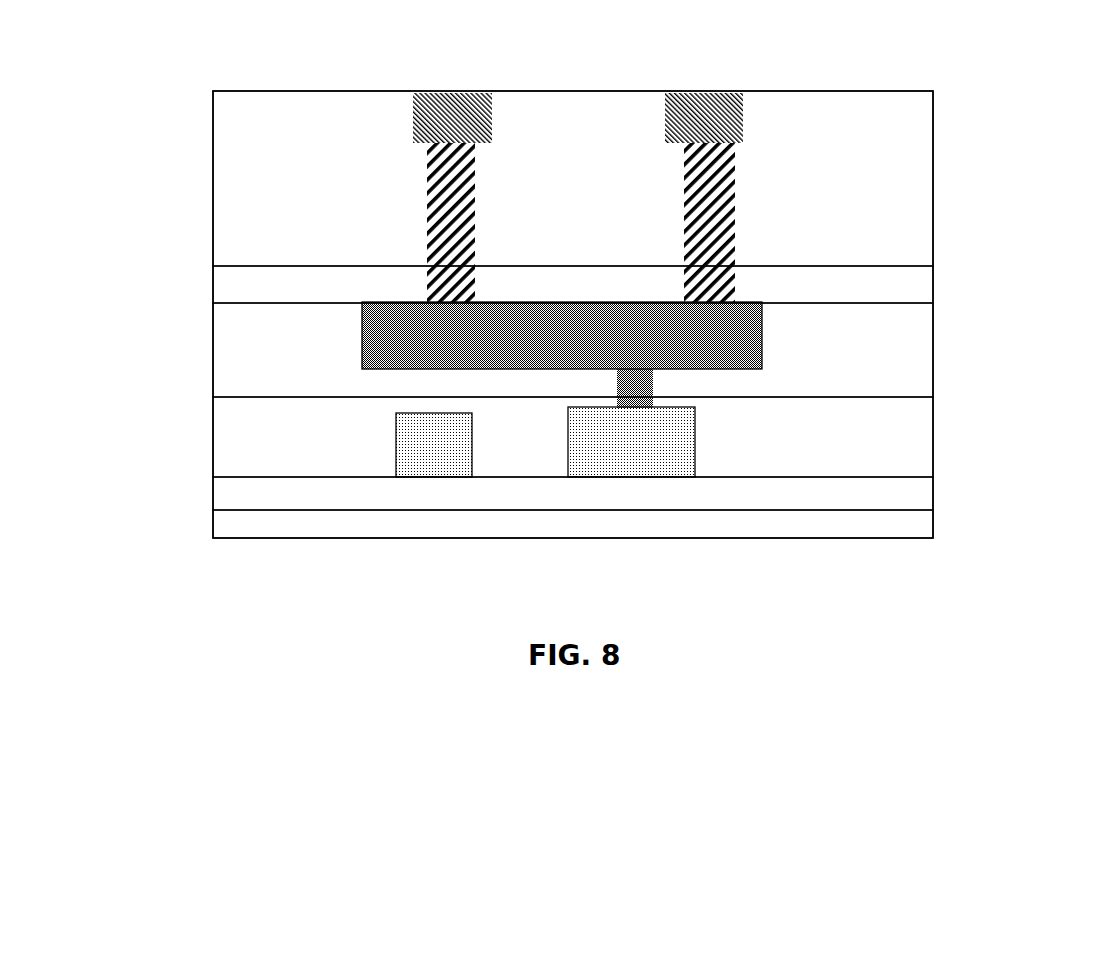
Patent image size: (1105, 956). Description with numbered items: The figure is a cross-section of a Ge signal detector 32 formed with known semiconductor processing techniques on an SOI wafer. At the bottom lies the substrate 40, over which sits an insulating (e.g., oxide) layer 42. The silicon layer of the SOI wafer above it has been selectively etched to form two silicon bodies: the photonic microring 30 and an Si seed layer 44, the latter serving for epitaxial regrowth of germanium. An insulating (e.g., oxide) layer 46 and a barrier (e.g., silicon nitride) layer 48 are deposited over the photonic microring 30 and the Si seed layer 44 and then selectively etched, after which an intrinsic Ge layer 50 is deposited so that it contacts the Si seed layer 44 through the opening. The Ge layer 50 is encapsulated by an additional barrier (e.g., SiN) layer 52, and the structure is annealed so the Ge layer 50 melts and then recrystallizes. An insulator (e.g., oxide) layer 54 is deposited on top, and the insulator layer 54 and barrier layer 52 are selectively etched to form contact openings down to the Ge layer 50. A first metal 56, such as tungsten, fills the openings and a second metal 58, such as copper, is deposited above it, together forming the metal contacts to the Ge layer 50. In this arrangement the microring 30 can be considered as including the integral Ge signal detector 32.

The Ge signal detector 32 is at (153, 120).
The substrate 40 is at (933, 525).
The insulating layer 42 is at (933, 490).
The insulating layer 46 is at (933, 434).
The barrier layer 48 is at (933, 359).
The additional barrier layer 52 is at (614, 290).
The insulator layer 54 is at (933, 191).
The photonic microring 30 is at (446, 458).
The Si seed layer 44 is at (645, 458).
The Ge layer 50 is at (593, 347).
The first metal 56 is at (621, 222).
The second metal 58 is at (743, 113).